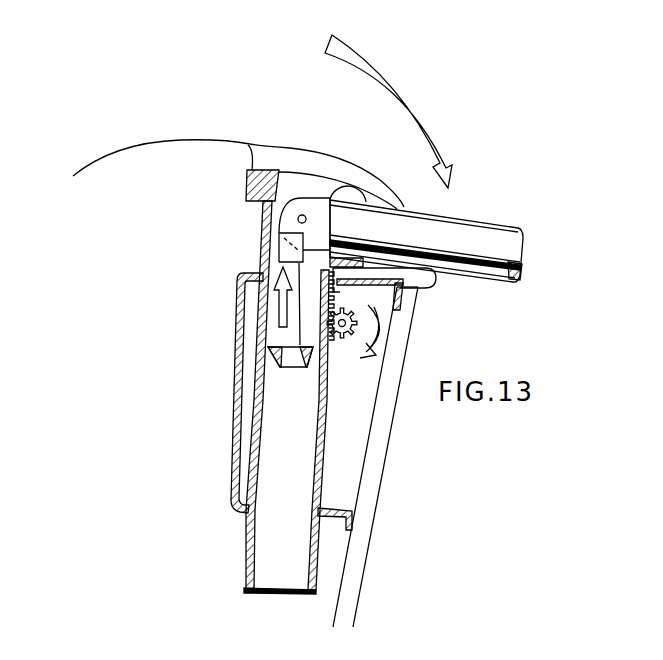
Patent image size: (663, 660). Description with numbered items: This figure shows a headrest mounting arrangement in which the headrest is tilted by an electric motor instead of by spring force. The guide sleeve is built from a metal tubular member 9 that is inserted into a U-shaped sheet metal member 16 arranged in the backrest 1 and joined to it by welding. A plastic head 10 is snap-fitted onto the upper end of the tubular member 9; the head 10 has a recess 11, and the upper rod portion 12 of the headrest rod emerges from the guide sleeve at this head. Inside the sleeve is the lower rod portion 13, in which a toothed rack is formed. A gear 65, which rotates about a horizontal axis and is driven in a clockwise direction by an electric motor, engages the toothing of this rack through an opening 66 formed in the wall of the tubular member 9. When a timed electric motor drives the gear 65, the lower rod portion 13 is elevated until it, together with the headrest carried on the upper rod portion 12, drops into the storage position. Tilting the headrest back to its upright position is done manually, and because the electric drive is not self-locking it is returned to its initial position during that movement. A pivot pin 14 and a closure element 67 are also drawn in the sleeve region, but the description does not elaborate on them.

The backrest 1 is at (198, 157).
The tubular member 9 is at (245, 547).
The head 10 is at (312, 177).
The recess 11 is at (330, 192).
The upper rod portion 12 is at (482, 233).
The lower rod portion 13 is at (280, 335).
The pivot pin 14 is at (302, 215).
The U-shaped sheet metal member 16 is at (233, 450).
The gear 65 is at (397, 308).
The opening 66 is at (334, 350).
The closure element 67 is at (310, 330).